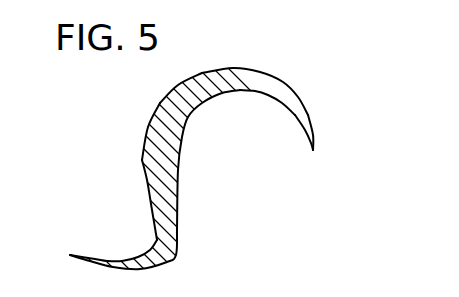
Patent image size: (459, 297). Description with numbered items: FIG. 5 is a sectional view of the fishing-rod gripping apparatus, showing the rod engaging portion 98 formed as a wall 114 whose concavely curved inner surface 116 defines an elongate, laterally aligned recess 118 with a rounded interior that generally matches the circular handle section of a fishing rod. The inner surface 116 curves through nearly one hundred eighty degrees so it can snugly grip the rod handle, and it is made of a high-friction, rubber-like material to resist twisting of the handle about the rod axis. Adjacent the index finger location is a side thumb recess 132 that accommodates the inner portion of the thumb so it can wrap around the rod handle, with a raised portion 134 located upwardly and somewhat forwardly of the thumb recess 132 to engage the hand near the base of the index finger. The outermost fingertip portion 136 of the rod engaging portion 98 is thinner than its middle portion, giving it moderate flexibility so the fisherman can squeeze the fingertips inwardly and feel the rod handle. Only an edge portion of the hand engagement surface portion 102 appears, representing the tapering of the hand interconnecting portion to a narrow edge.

The rod engaging portion 98 is at (157, 110).
The raised portion 134 is at (173, 87).
The wall 114 is at (212, 60).
The recess 118 is at (242, 127).
The fingertip portion 136 is at (315, 132).
The inner surface 116 is at (297, 118).
The side thumb recess 132 is at (138, 238).
The hand engagement surface portion 102 is at (97, 259).